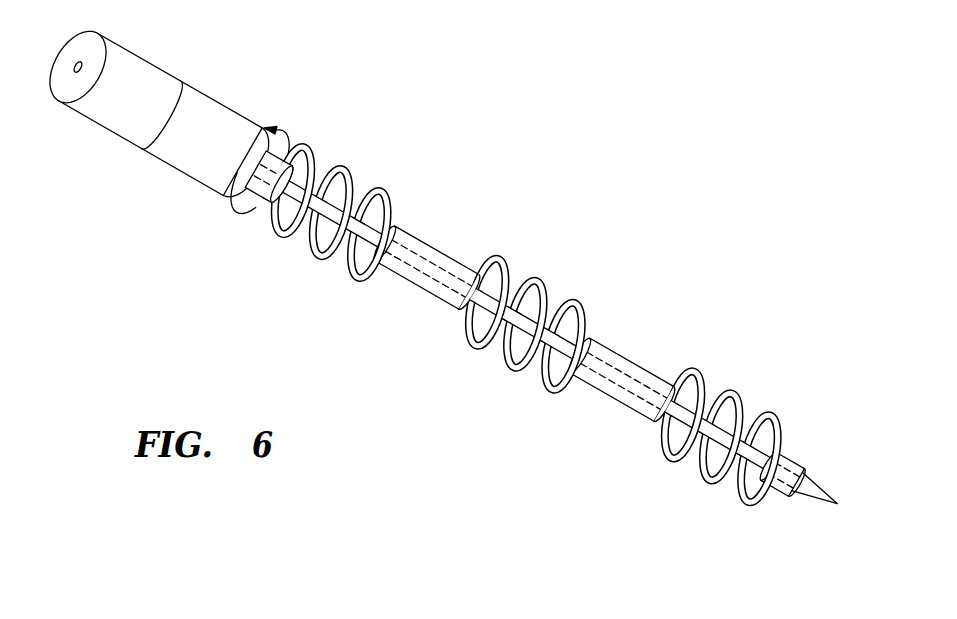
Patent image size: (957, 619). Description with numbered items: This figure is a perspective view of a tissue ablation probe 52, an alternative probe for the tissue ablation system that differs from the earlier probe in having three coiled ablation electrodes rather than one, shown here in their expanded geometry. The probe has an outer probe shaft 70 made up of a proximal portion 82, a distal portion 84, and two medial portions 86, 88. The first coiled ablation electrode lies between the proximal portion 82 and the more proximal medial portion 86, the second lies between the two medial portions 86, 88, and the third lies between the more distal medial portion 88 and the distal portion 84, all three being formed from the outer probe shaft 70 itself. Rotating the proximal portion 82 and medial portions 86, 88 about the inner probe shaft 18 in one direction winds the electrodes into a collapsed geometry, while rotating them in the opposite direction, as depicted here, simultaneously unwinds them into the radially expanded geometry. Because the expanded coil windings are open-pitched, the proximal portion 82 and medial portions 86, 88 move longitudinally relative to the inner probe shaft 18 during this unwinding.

The inner probe shaft 18 is at (411, 248).
The tissue ablation probe 52 is at (458, 196).
The outer probe shaft 70 is at (407, 279).
The proximal portion 82 is at (290, 136).
The distal portion 84 is at (793, 450).
The medial portion 86 is at (437, 245).
The medial portion 88 is at (635, 356).